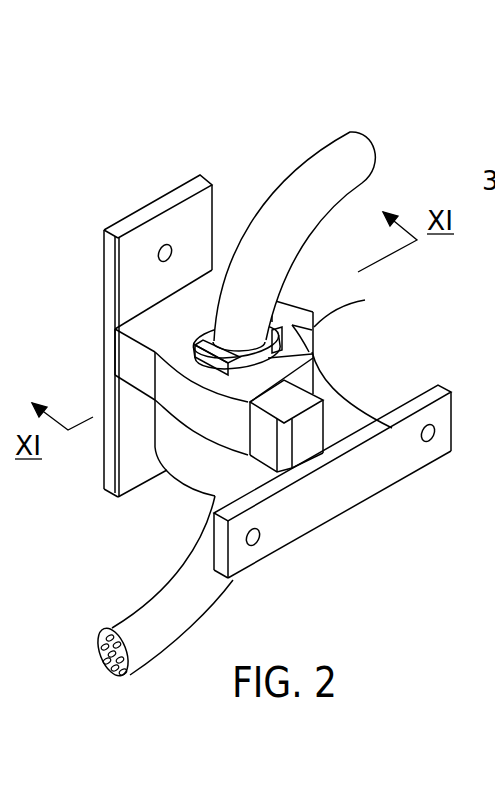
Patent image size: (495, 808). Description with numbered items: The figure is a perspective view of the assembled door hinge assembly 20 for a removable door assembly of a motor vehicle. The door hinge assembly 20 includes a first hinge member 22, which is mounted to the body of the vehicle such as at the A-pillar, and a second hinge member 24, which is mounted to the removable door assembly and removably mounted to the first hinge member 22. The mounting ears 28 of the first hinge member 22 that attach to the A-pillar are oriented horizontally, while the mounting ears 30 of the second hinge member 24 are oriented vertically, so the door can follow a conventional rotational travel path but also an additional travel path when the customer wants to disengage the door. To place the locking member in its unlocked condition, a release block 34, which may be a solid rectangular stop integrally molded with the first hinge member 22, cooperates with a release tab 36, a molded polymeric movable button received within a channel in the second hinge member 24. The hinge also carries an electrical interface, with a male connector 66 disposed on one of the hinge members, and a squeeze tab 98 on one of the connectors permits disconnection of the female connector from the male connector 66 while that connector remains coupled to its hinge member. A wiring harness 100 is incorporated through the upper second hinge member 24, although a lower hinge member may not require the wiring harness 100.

The door hinge assembly 20 is at (128, 108).
The first hinge member 22 is at (312, 513).
The second hinge member 24 is at (152, 237).
The mounting ears 28 is at (418, 458).
The mounting ears 30 is at (127, 280).
The release block 34 is at (318, 435).
The release tab 36 is at (322, 293).
The male connector 66 is at (318, 358).
The squeeze tab 98 is at (291, 314).
The wiring harness 100 is at (351, 145).